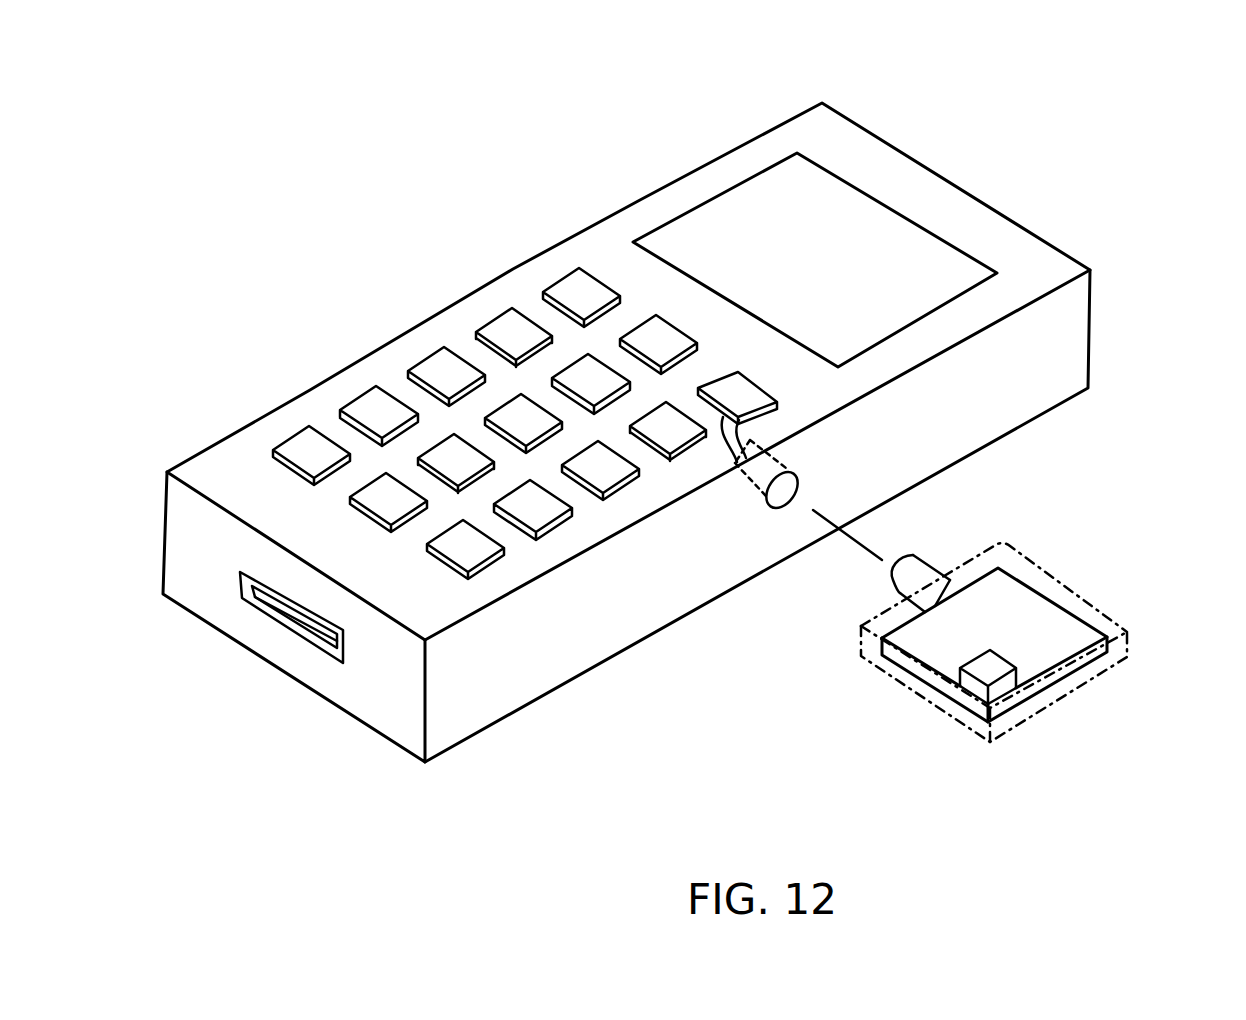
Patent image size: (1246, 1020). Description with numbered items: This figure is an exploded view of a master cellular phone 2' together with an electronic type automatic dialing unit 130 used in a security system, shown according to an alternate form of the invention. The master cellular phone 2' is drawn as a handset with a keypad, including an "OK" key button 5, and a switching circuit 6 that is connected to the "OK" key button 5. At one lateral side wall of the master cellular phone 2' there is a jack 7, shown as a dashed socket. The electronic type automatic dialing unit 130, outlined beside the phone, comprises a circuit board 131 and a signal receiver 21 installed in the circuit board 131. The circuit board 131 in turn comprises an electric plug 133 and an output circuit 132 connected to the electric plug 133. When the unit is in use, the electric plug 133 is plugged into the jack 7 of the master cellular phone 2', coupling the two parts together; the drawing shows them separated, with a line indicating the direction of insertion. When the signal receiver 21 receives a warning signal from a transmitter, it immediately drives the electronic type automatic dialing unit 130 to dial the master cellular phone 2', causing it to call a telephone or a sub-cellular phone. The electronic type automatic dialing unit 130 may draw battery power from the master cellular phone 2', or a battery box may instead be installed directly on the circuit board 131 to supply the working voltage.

The master cellular phone 2' is at (626, 417).
The "OK" key button 5 is at (735, 390).
The switching circuit 6 is at (720, 443).
The jack 7 is at (790, 487).
The electronic type automatic dialing unit 130 is at (1118, 600).
The circuit board 131 is at (1043, 622).
The output circuit 132 is at (946, 590).
The electric plug 133 is at (893, 576).
The signal receiver 21 is at (987, 675).